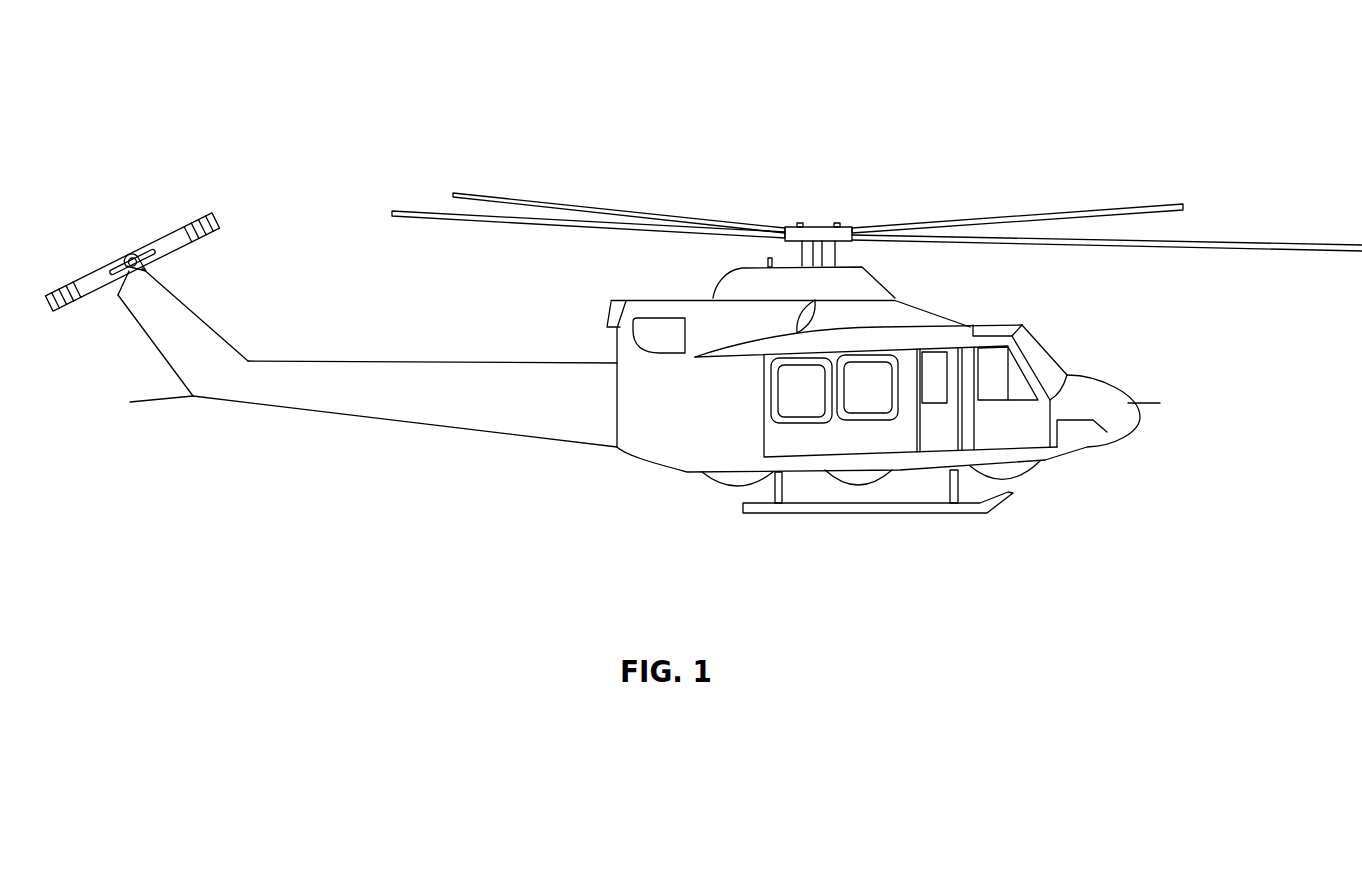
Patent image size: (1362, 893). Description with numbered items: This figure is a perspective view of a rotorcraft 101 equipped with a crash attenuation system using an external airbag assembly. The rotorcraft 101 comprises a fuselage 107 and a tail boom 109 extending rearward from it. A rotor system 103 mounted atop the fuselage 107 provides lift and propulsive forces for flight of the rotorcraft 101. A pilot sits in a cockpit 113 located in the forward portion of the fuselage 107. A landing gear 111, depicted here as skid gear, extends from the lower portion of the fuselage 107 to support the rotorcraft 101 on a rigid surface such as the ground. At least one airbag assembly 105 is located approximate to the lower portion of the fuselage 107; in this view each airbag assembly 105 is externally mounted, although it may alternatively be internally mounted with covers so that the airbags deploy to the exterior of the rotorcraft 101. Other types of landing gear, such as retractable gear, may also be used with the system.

The rotorcraft 101 is at (564, 156).
The rotor system 103 is at (785, 228).
The airbag assembly 105 is at (714, 496).
The fuselage 107 is at (627, 453).
The tail boom 109 is at (340, 362).
The landing gear 111 is at (872, 515).
The cockpit 113 is at (1047, 360).